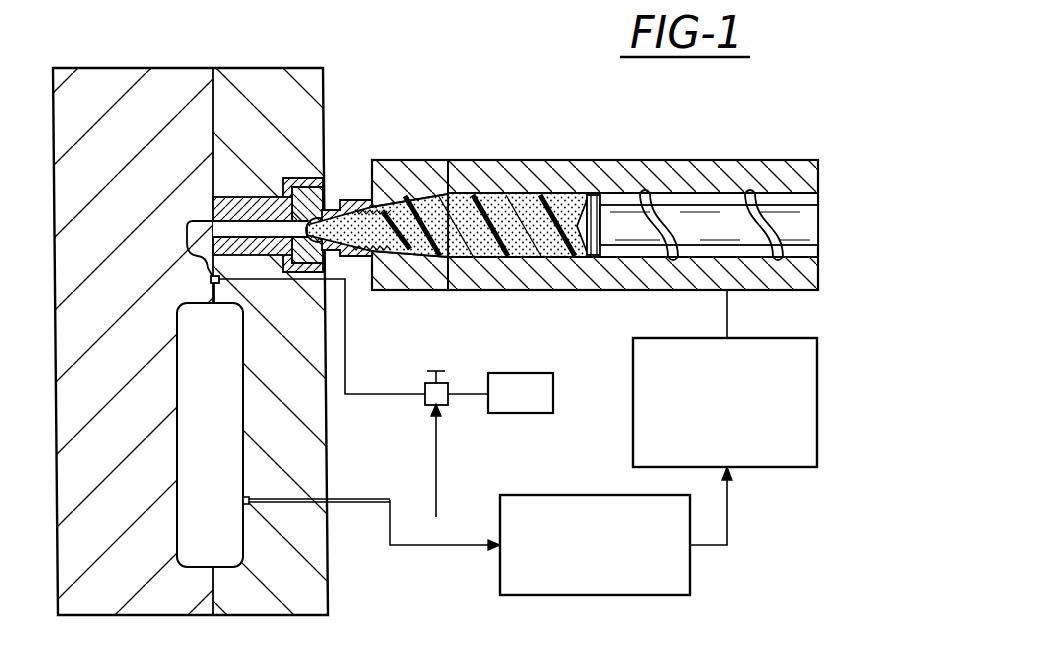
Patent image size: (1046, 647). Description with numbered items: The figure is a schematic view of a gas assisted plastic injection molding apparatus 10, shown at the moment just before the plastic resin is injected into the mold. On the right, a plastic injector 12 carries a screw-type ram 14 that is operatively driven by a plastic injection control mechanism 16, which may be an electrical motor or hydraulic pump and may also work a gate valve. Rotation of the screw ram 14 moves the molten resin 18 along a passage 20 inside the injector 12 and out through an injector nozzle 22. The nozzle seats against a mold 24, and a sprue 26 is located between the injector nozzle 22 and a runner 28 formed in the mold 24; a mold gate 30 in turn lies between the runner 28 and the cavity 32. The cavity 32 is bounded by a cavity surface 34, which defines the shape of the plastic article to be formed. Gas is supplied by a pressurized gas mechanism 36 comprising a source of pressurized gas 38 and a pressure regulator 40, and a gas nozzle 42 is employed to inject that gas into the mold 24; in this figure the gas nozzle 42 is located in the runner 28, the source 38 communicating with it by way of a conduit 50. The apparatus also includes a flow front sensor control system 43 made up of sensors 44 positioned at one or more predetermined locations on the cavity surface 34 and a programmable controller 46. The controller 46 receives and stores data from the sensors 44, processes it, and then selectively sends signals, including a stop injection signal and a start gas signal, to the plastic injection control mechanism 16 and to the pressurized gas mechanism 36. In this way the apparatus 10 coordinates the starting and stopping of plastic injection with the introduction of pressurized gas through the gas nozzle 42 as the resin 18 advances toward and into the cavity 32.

The gas assisted plastic injection molding apparatus 10 is at (457, 130).
The plastic injector 12 is at (611, 160).
The screw-type ram 14 is at (710, 210).
The plastic injection control mechanism 16 is at (810, 374).
The molten resin 18 is at (527, 200).
The passage 20 is at (485, 247).
The injector nozzle 22 is at (330, 208).
The mold 24 is at (153, 61).
The sprue 26 is at (258, 197).
The runner 28 is at (192, 257).
The mold gate 30 is at (190, 310).
The cavity 32 is at (193, 404).
The cavity surface 34 is at (183, 497).
The pressurized gas mechanism 36 is at (537, 364).
The source of pressurized gas 38 is at (535, 413).
The pressure regulator 40 is at (441, 390).
The gas nozzle 42 is at (228, 287).
The flow front sensor control system 43 is at (260, 487).
The sensors 44 is at (249, 507).
The controller 46 is at (690, 565).
The conduit 50 is at (347, 352).